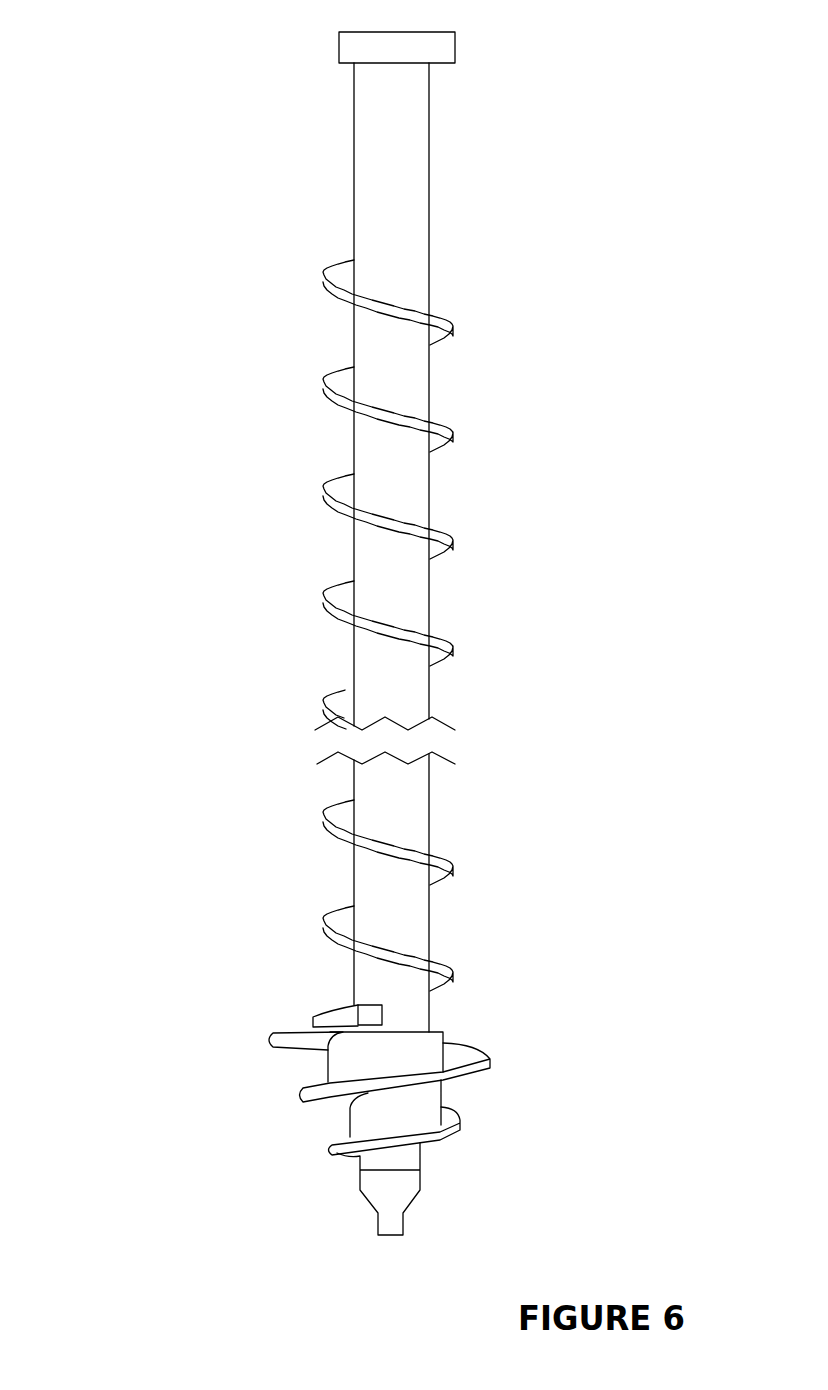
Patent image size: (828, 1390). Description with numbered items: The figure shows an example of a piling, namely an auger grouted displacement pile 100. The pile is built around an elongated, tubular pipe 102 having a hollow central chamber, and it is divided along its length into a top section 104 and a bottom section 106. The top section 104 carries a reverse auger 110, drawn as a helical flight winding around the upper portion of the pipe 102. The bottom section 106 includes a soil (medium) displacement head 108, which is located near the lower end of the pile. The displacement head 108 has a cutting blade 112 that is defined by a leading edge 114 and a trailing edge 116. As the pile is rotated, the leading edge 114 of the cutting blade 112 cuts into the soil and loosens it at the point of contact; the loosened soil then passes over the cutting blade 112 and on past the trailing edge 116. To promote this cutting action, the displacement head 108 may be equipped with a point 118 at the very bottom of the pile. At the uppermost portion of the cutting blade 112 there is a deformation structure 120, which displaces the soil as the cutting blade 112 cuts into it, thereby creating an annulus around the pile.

The auger grouted displacement pile 100 is at (184, 92).
The elongated tubular pipe 102 is at (350, 450).
The top section 104 is at (208, 488).
The bottom section 106 is at (208, 860).
The soil displacement head 108 is at (249, 1093).
The reverse auger 110 is at (450, 537).
The cutting blade 112 is at (490, 1062).
The leading edge 114 is at (335, 1147).
The trailing edge 116 is at (350, 1035).
The point 118 is at (380, 1230).
The deformation structure 120 is at (370, 1007).